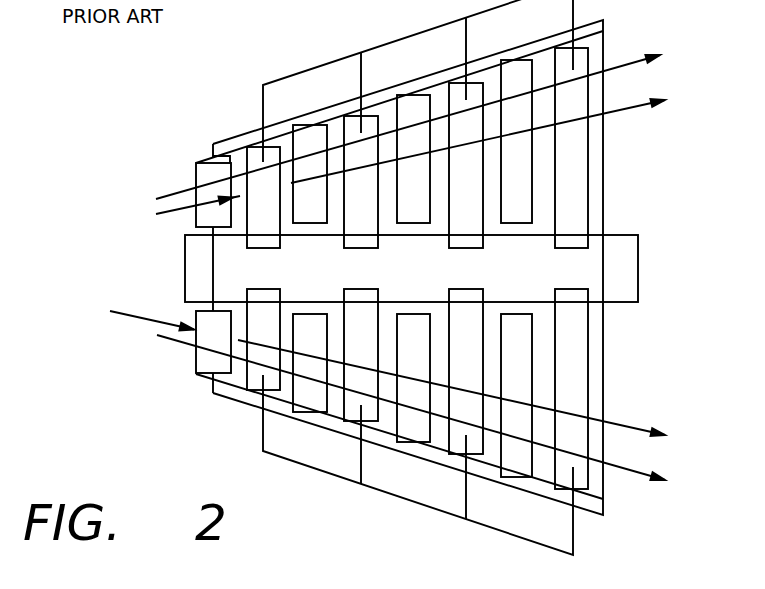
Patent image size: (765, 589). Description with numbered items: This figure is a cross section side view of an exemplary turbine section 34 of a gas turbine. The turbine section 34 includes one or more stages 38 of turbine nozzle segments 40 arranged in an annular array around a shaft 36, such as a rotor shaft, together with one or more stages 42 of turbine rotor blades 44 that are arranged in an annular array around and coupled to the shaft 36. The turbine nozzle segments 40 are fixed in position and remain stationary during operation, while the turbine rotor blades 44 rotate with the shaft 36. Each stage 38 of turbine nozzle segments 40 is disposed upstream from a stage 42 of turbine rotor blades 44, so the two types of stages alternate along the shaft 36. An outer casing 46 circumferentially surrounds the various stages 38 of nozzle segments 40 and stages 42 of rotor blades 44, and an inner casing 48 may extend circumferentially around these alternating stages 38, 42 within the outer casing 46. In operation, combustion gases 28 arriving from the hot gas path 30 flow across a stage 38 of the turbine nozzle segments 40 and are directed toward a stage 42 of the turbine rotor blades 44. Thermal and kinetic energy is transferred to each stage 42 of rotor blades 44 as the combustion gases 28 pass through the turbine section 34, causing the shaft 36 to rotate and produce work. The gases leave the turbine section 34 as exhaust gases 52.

The combustion gases 28 is at (181, 193).
The hot gas path 30 is at (627, 105).
The turbine section 34 is at (118, 128).
The shaft 36 is at (627, 262).
The stage of turbine nozzle segments 38 is at (418, 503).
The turbine nozzle segments 40 is at (227, 346).
The stage of turbine rotor blades 42 is at (410, 36).
The turbine rotor blades 44 is at (277, 212).
The outer casing 46 is at (587, 520).
The inner casing 48 is at (590, 487).
The exhaust gases 52 is at (620, 60).